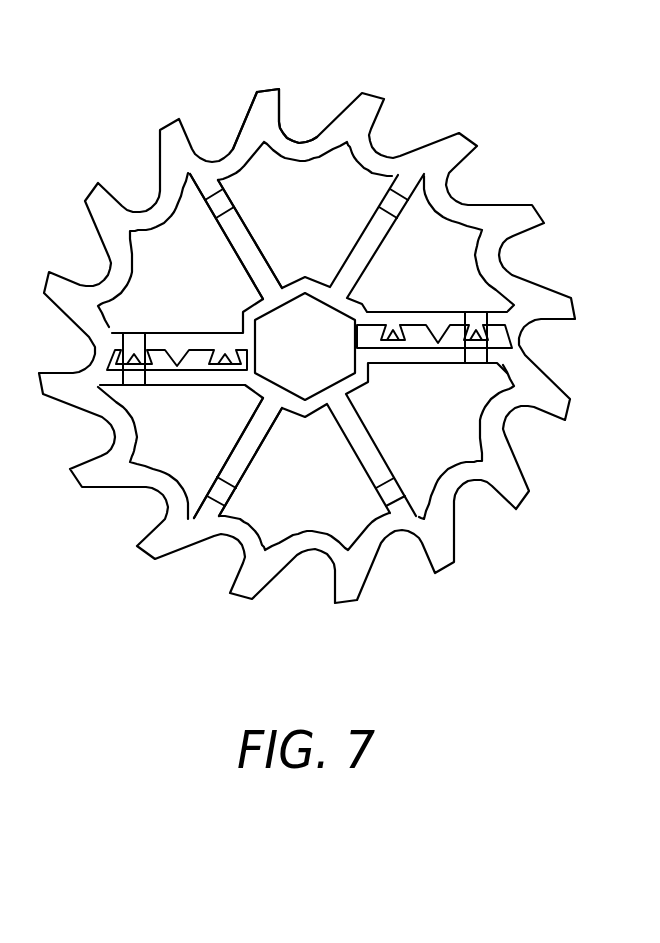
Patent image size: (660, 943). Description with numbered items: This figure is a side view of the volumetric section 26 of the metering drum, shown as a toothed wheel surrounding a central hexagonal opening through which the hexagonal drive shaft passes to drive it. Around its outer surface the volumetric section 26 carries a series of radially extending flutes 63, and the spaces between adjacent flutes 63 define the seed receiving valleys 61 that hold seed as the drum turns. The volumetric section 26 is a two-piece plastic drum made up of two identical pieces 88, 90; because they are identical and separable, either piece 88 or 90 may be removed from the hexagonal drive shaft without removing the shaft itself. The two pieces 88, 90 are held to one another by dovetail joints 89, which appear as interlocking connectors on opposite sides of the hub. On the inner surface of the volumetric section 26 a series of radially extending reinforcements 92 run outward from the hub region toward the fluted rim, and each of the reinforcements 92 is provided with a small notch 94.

The volumetric section 26 is at (524, 156).
The seed receiving valleys 61 is at (306, 112).
The radially extending flutes 63 is at (258, 100).
The piece 88 is at (308, 230).
The dovetail joints 89 is at (177, 340).
The piece 90 is at (304, 460).
The radially extending reinforcements 92 is at (253, 253).
The small notch 94 is at (473, 314).